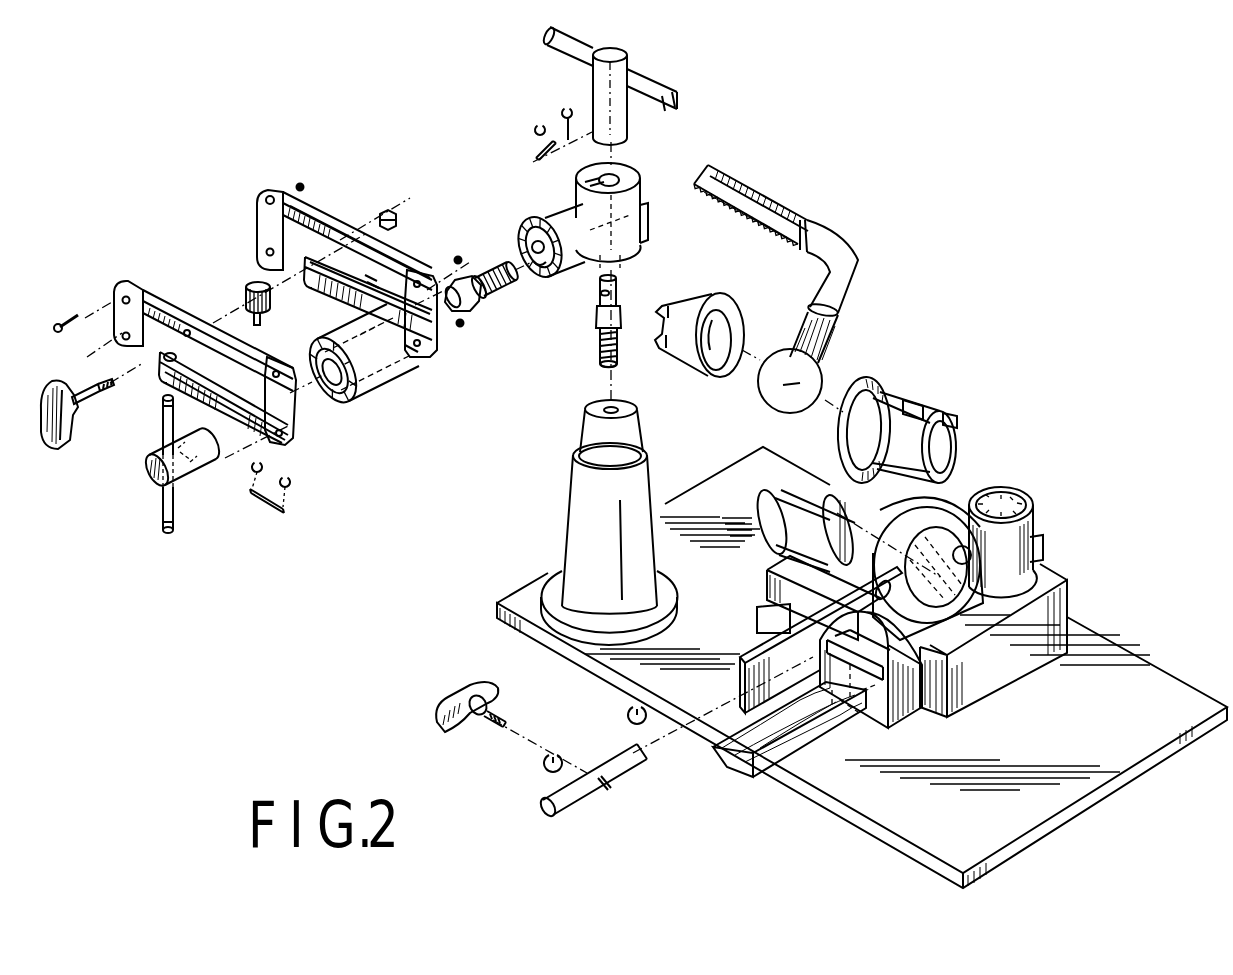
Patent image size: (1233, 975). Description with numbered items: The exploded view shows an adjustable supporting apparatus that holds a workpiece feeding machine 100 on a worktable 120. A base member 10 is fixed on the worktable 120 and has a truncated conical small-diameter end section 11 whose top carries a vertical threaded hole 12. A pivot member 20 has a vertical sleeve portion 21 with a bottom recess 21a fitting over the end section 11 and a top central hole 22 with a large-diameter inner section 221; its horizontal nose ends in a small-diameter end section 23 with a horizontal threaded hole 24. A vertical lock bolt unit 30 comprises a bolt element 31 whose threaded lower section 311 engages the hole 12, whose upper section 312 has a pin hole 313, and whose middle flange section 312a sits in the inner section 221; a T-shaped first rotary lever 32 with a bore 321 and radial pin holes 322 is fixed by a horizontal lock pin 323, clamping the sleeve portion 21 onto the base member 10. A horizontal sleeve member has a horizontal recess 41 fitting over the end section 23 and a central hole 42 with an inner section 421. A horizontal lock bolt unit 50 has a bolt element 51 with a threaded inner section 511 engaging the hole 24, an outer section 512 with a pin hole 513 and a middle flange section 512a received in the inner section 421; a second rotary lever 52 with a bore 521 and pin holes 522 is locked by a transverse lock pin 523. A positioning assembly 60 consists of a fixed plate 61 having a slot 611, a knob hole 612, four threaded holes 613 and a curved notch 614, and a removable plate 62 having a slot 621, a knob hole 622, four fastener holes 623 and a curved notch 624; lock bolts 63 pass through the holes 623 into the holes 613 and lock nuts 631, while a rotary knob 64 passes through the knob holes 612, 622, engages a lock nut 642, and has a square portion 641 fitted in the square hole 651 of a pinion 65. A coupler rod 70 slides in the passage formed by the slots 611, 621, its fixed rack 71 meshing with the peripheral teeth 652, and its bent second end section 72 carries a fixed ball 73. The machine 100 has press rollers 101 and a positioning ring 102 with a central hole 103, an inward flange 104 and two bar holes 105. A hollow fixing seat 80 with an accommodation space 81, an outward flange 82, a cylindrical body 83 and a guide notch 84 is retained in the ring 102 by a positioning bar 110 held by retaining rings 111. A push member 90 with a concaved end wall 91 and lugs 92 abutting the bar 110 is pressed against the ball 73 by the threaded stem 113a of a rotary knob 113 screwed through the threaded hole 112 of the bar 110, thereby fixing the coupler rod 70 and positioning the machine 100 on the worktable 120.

The base member 10 is at (581, 522).
The small-diameter end section 11 is at (580, 448).
The vertical threaded hole 12 is at (580, 418).
The pivot member 20 is at (586, 259).
The vertical sleeve portion 21 is at (618, 168).
The truncated conical vertical recess 21a is at (536, 158).
The central hole 22 is at (590, 180).
The large-diameter inner section 221 is at (637, 242).
The small-diameter end section 23 is at (598, 268).
The horizontal threaded hole 24 is at (575, 278).
The vertical lock bolt unit 30 is at (622, 223).
The vertical bolt element 31 is at (633, 270).
The externally threaded lower section 311 is at (618, 362).
The upper section 312 is at (614, 283).
The middle flange section 312a is at (614, 335).
The horizontal pin hole 313 is at (600, 368).
The T-shaped first rotary lever 32 is at (603, 85).
The vertical bore 321 is at (583, 78).
The radial pin holes 322 is at (592, 112).
The horizontal lock pin 323 is at (540, 127).
The truncated conical horizontal recess 41 is at (415, 360).
The central hole 42 is at (383, 371).
The large-diameter inner section 421 is at (398, 388).
The horizontal lock bolt unit 50 is at (333, 380).
The horizontal bolt element 51 is at (490, 367).
The externally threaded inner section 511 is at (514, 282).
The outer section 512 is at (467, 262).
The middle flange section 512a is at (545, 266).
The transverse pin hole 513 is at (485, 262).
The T-shaped second rotary lever 52 is at (262, 479).
The horizontal bore 521 is at (153, 490).
The radial pin holes 522 is at (203, 465).
The transverse lock pin 523 is at (267, 503).
The positioning assembly 60 is at (252, 292).
The fixed plate 61 is at (339, 235).
The open-ended horizontal slot 611 is at (310, 217).
The knob hole 612 is at (306, 257).
The threaded holes 613 is at (272, 196).
The curved notch 614 is at (378, 280).
The removable plate 62 is at (241, 310).
The open-ended horizontal slot 621 is at (296, 405).
The knob hole 622 is at (171, 354).
The fastener holes 623 is at (123, 284).
The curved notch 624 is at (253, 407).
The lock bolts 63 is at (70, 307).
The lock nuts 631 is at (302, 184).
The rotary knob 64 is at (97, 432).
The square-cross-sectioned portion 641 is at (97, 404).
The lock nut 642 is at (393, 207).
The pinion 65 is at (236, 277).
The square hole 651 is at (256, 313).
The outer peripheral teeth 652 is at (257, 285).
The coupler rod 70 is at (808, 308).
The fixed rack 71 is at (745, 225).
The bent second end section 72 is at (855, 270).
The fixed ball 73 is at (792, 413).
The fixing seat 80 is at (912, 384).
The accommodation space 81 is at (950, 430).
The outward flange 82 is at (866, 380).
The cylindrical body 83 is at (912, 398).
The guide notch 84 is at (948, 412).
The push member 90 is at (705, 350).
The concaved end wall 91 is at (723, 345).
The lugs 92 is at (660, 313).
The workpiece feeding machine 100 is at (944, 574).
The press rollers 101 is at (864, 712).
The positioning ring 102 is at (845, 515).
The central hole 103 is at (930, 500).
The inward flange 104 is at (977, 567).
The horizontal bar holes 105 is at (908, 652).
The positioning bar 110 is at (544, 752).
The retaining rings 111 is at (545, 762).
The threaded hole 112 is at (600, 782).
The rotary knob 113 is at (465, 710).
The threaded stem 113a is at (493, 717).
The worktable 120 is at (588, 668).